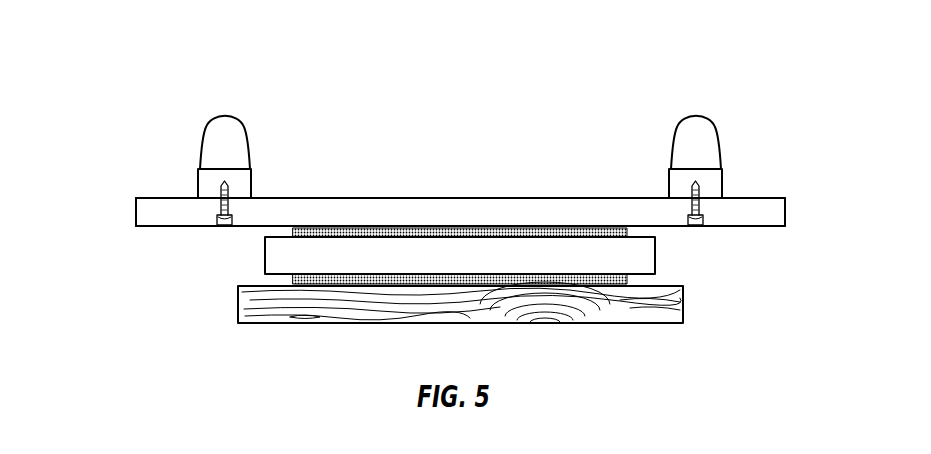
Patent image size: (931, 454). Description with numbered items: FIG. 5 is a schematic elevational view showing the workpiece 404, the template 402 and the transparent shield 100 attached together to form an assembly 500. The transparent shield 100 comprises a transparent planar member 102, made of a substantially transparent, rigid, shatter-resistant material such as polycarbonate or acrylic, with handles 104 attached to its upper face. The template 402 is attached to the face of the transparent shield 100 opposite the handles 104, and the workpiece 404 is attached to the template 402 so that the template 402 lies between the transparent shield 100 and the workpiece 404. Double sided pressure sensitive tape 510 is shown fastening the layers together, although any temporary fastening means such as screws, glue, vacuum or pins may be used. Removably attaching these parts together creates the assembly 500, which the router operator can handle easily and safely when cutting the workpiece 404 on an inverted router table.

The assembly 500 is at (569, 67).
The transparent shield 100 is at (134, 213).
The transparent planar member 102 is at (458, 209).
The handles 104 is at (246, 123).
The double sided pressure sensitive tape 510 is at (293, 233).
The template 402 is at (656, 258).
The workpiece 404 is at (684, 300).